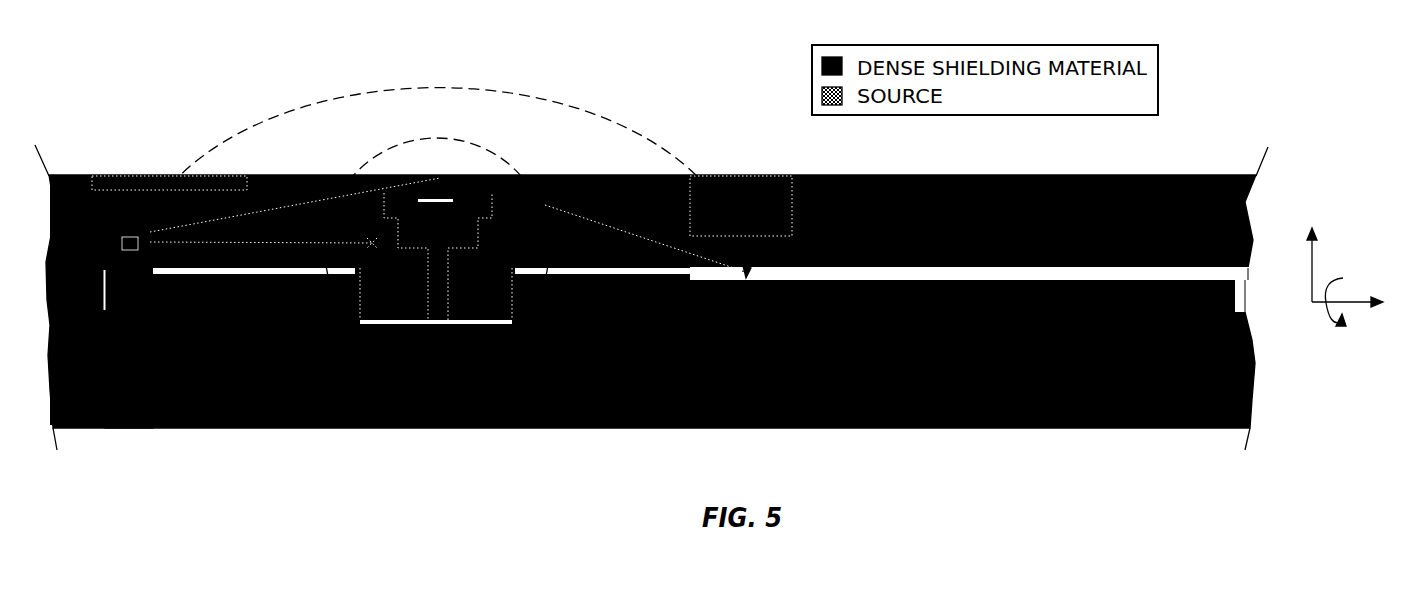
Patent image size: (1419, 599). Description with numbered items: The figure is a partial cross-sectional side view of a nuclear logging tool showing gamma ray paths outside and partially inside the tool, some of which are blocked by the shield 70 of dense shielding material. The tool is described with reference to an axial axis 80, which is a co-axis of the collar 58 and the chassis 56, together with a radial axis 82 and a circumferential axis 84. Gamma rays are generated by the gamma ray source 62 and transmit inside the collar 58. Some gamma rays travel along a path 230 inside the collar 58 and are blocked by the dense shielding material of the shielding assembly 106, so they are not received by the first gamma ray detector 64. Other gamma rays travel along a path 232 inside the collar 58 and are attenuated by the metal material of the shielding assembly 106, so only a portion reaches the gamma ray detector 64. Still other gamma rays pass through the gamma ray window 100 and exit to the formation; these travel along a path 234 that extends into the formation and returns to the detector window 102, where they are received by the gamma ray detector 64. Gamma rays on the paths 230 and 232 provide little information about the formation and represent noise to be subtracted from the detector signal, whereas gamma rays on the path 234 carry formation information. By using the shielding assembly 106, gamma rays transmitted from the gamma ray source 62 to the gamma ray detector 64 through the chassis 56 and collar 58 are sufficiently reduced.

The chassis 56 is at (925, 428).
The collar 58 is at (925, 175).
The gamma ray source 62 is at (70, 175).
The first gamma ray detector 64 is at (1095, 175).
The shield 70 is at (577, 84).
The axial axis 80 is at (1360, 302).
The radial axis 82 is at (1312, 275).
The circumferential axis 84 is at (1334, 330).
The gamma ray window 100 is at (152, 176).
The detector window 102 is at (742, 175).
The shielding assembly 106 is at (462, 143).
The path 230 is at (280, 175).
The path 232 is at (587, 175).
The path 234 is at (443, 87).